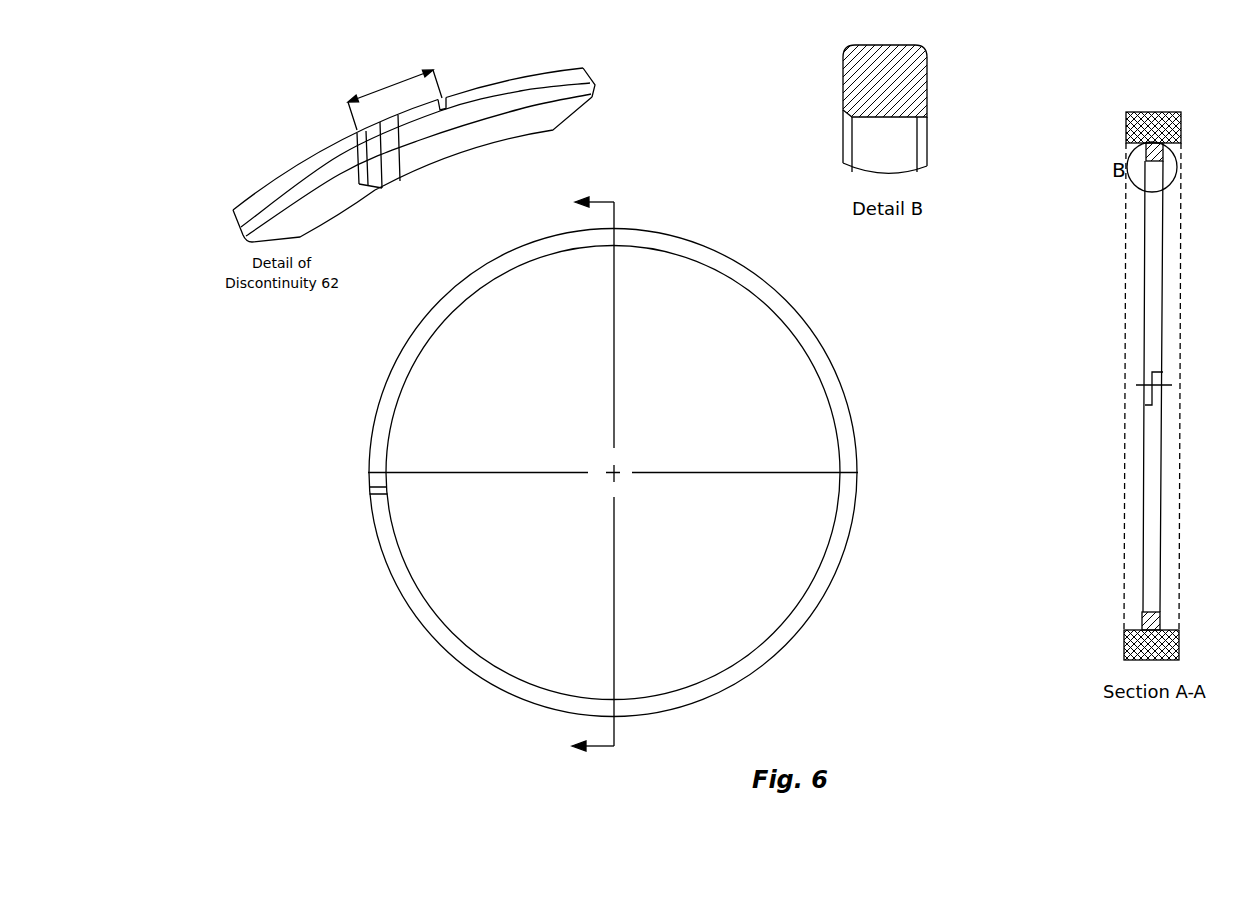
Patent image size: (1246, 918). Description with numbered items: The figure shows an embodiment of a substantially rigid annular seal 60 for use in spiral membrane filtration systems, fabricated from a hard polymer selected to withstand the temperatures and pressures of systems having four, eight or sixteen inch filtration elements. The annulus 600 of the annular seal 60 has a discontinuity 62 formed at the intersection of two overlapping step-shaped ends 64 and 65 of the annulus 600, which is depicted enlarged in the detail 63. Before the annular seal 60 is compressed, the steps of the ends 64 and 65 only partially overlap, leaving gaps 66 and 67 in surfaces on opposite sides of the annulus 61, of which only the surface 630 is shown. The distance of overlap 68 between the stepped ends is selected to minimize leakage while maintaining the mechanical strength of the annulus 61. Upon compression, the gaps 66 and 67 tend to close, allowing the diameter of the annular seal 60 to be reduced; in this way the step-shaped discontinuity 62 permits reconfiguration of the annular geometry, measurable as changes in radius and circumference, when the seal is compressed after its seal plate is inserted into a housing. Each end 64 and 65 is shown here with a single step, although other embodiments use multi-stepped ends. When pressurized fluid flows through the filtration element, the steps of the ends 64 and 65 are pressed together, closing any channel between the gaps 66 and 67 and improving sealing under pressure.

The annular seal 60 is at (368, 707).
The annulus 600 is at (371, 557).
The annulus 61 is at (846, 534).
The discontinuity 62 is at (346, 487).
The detail 63 is at (282, 122).
The surface 630 is at (528, 120).
The step-shaped end 64 is at (415, 115).
The step-shaped end 65 is at (380, 138).
The gap 66 is at (385, 210).
The gap 67 is at (449, 84).
The distance of overlap 68 is at (395, 100).